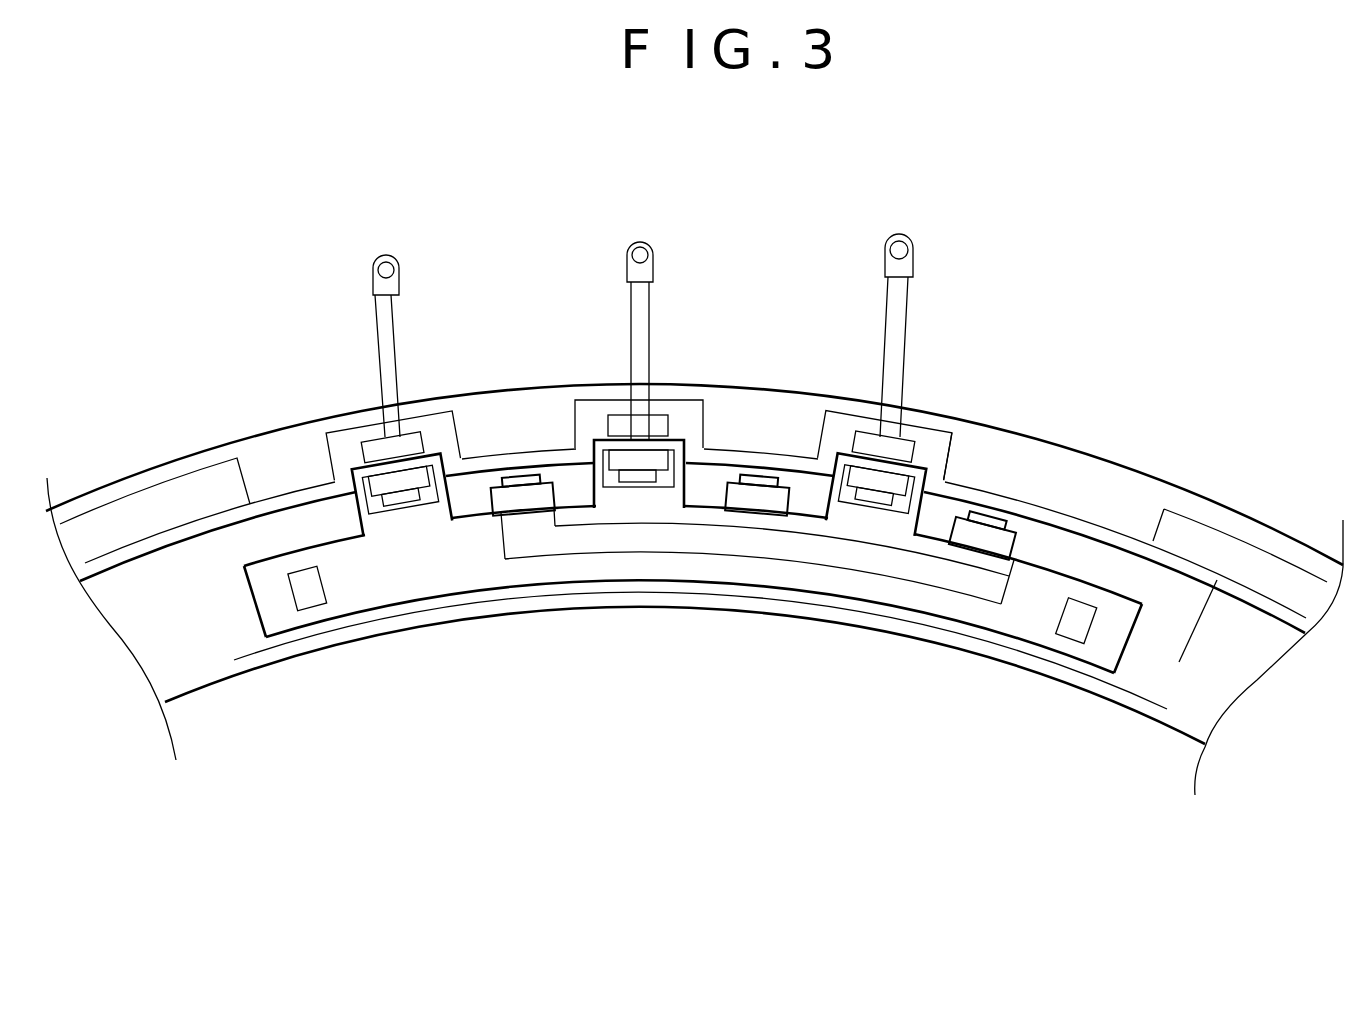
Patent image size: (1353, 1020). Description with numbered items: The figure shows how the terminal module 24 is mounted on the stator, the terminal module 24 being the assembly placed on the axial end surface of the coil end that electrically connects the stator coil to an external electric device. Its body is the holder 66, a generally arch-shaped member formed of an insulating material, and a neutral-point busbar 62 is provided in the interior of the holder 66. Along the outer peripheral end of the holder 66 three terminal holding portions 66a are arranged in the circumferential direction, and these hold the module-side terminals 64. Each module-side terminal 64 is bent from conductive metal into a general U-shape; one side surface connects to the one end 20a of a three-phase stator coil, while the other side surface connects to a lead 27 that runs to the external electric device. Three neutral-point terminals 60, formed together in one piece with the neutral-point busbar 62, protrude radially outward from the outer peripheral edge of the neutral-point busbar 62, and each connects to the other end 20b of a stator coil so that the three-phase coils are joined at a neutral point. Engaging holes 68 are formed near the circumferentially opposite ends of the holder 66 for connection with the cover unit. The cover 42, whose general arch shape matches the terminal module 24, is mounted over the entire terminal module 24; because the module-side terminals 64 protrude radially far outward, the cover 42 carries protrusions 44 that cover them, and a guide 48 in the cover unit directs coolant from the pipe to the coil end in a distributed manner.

The one end of the stator coil 20a is at (403, 498).
The other end of the stator coil 20b is at (525, 445).
The terminal module 24 is at (1007, 652).
The holder 66 is at (700, 712).
The lead 27 is at (373, 337).
The cover 42 is at (807, 618).
The protrusion 44 is at (332, 453).
The guide 48 is at (150, 495).
The neutral-point terminal 60 is at (520, 500).
The neutral-point busbar 62 is at (612, 553).
The module-side terminal 64 is at (413, 437).
The terminal holding portion 66a is at (950, 460).
The engaging hole 68 is at (307, 595).